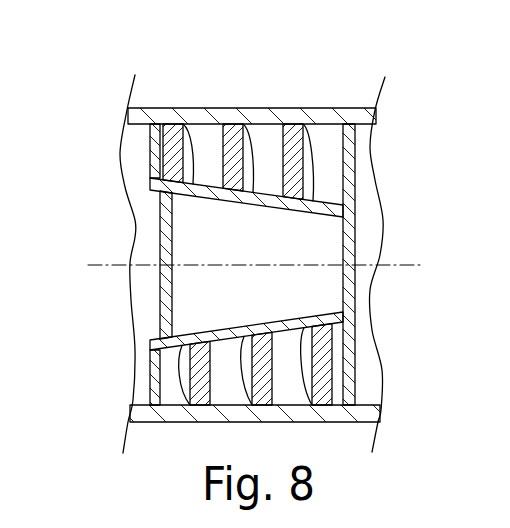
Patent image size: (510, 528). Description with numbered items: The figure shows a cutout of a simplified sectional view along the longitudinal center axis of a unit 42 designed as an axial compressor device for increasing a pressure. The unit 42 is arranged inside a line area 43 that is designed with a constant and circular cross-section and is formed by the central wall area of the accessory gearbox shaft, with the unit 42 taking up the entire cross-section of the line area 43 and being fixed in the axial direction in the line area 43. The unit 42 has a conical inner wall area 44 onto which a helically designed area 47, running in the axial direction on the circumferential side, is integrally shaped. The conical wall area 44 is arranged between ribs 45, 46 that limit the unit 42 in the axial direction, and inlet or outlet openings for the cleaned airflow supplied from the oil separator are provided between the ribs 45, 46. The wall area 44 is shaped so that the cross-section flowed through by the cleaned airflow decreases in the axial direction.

The unit 42 is at (207, 99).
The line area 43 is at (313, 118).
The conical inner wall area 44 is at (335, 205).
The rib 45 is at (356, 345).
The rib 46 is at (150, 375).
The helically designed area 47 is at (232, 140).